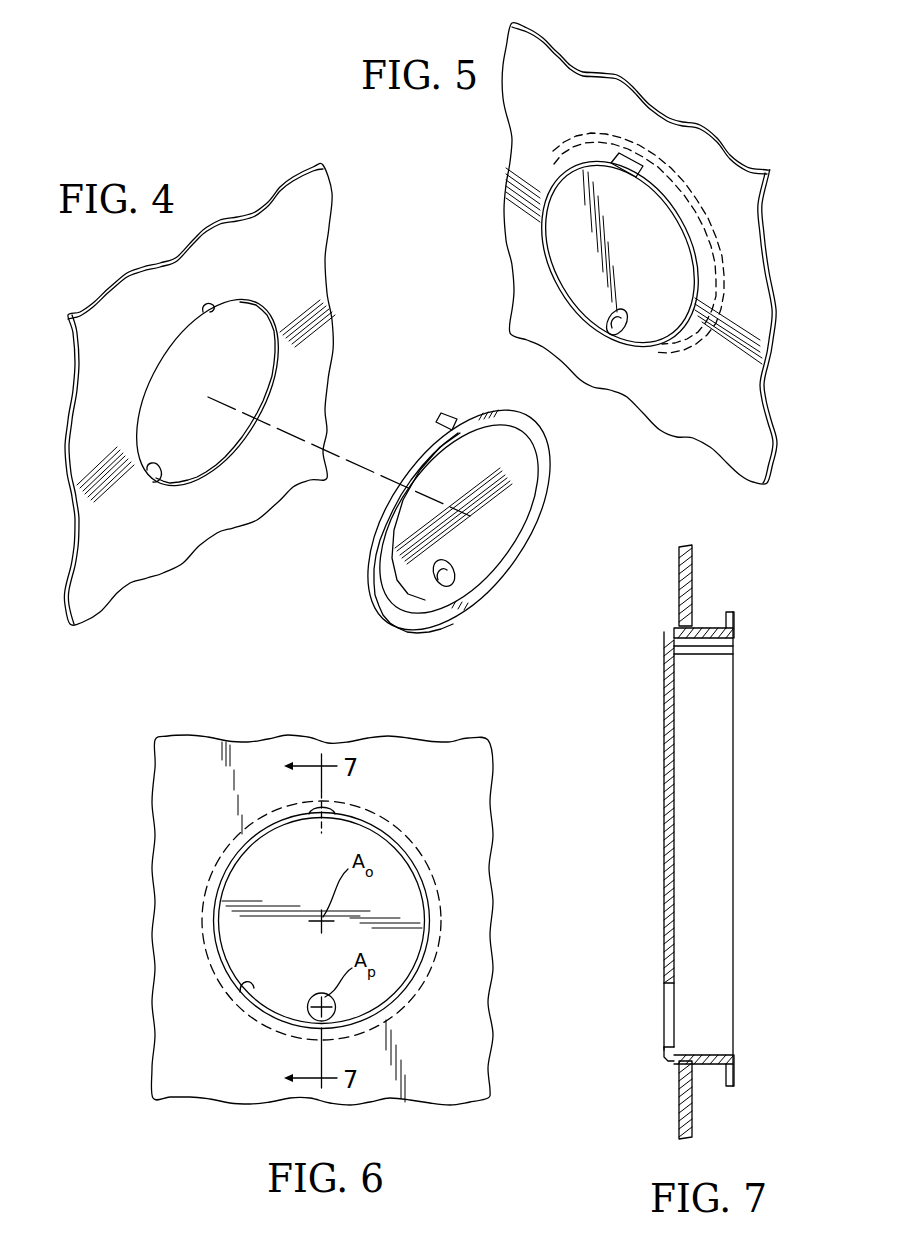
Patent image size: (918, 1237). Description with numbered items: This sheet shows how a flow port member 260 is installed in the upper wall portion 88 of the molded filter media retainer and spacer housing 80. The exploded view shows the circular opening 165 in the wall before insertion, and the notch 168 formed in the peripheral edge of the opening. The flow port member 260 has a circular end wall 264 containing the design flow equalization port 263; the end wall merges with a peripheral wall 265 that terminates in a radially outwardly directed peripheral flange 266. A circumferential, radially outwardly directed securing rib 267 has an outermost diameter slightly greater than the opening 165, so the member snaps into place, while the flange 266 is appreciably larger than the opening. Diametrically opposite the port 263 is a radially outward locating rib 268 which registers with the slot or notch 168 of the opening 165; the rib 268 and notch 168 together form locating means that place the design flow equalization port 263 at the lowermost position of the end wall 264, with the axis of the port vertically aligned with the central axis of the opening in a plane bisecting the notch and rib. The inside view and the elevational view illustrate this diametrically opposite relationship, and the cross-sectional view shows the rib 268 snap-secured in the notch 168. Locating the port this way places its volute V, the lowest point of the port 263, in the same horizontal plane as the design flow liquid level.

In FIG. 4, the retainer and spacer housing 80 is at (183, 394).
In FIG. 5, the retainer and spacer housing 80 is at (656, 254).
In FIG. 6, the retainer and spacer housing 80 is at (300, 890).
In FIG. 7, the retainer and spacer housing 80 is at (729, 829).
In FIG. 4, the upper wall portion 88 is at (128, 346).
In FIG. 5, the upper wall portion 88 is at (739, 195).
In FIG. 6, the upper wall portion 88 is at (462, 786).
In FIG. 7, the upper wall portion 88 is at (693, 556).
In FIG. 4, the opening 165 is at (160, 483).
In FIG. 6, the opening 165 is at (412, 876).
In FIG. 7, the opening 165 is at (691, 1047).
In FIG. 4, the locating slot or notch 168 is at (206, 312).
In FIG. 5, the locating slot or notch 168 is at (608, 133).
In FIG. 6, the locating slot or notch 168 is at (315, 816).
In FIG. 7, the locating slot or notch 168 is at (683, 654).
In FIG. 4, the flow port member 260 is at (471, 515).
In FIG. 5, the flow port member 260 is at (588, 228).
In FIG. 6, the flow port member 260 is at (368, 920).
In FIG. 7, the flow port member 260 is at (694, 845).
In FIG. 4, the design flow equalization port 263 is at (456, 575).
In FIG. 5, the design flow equalization port 263 is at (629, 331).
In FIG. 7, the design flow equalization port 263 is at (671, 1010).
In FIG. 4, the circular end wall 264 is at (478, 547).
In FIG. 5, the circular end wall 264 is at (670, 296).
In FIG. 6, the circular end wall 264 is at (295, 968).
In FIG. 7, the circular end wall 264 is at (677, 837).
In FIG. 4, the peripheral wall 265 is at (529, 511).
In FIG. 7, the peripheral wall 265 is at (707, 1050).
In FIG. 4, the peripheral flange 266 is at (545, 462).
In FIG. 6, the peripheral flange 266 is at (406, 997).
In FIG. 7, the peripheral flange 266 is at (734, 614).
In FIG. 4, the securing rib 267 is at (398, 458).
In FIG. 6, the securing rib 267 is at (242, 985).
In FIG. 7, the securing rib 267 is at (671, 1056).
In FIG. 4, the locating rib 268 is at (444, 418).
In FIG. 5, the locating rib 268 is at (624, 176).
In FIG. 6, the locating rib 268 is at (324, 812).
In FIG. 7, the locating rib 268 is at (702, 628).
In FIG. 4, the volute V is at (428, 597).
In FIG. 5, the volute V is at (614, 340).
In FIG. 6, the volute V is at (308, 1010).